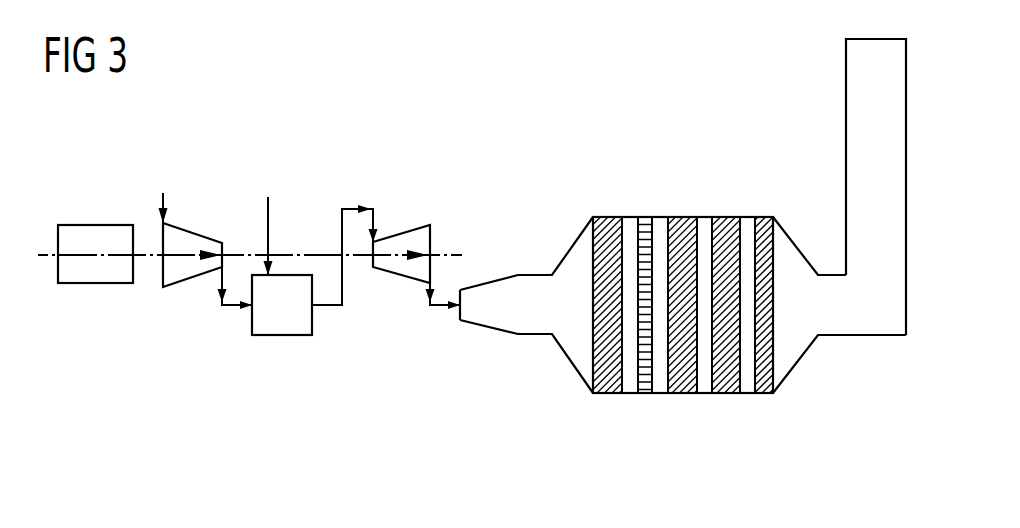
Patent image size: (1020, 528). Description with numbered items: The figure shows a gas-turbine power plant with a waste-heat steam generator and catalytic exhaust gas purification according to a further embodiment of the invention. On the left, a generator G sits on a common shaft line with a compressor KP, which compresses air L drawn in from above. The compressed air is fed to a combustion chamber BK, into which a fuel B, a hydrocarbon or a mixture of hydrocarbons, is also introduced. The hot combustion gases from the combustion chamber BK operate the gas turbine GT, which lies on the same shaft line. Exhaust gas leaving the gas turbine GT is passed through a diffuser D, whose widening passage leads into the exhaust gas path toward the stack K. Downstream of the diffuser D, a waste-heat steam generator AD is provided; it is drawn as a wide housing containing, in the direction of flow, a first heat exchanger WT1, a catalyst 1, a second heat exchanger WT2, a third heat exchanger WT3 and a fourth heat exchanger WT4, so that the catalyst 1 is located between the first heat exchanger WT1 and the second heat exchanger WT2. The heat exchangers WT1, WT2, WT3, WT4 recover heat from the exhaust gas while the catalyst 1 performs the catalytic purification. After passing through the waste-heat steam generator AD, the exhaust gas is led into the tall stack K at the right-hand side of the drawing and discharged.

The generator G is at (95, 274).
The air L is at (163, 192).
The compressor KP is at (207, 273).
The fuel B is at (269, 218).
The combustion chamber BK is at (315, 289).
The gas turbine GT is at (416, 269).
The diffuser D is at (526, 305).
The waste-heat steam generator AD is at (681, 336).
The heat exchanger WT1 is at (606, 325).
The catalyst 1 is at (645, 402).
The heat exchanger WT2 is at (687, 325).
The heat exchanger WT3 is at (727, 402).
The heat exchanger WT4 is at (765, 325).
The stack K is at (863, 186).